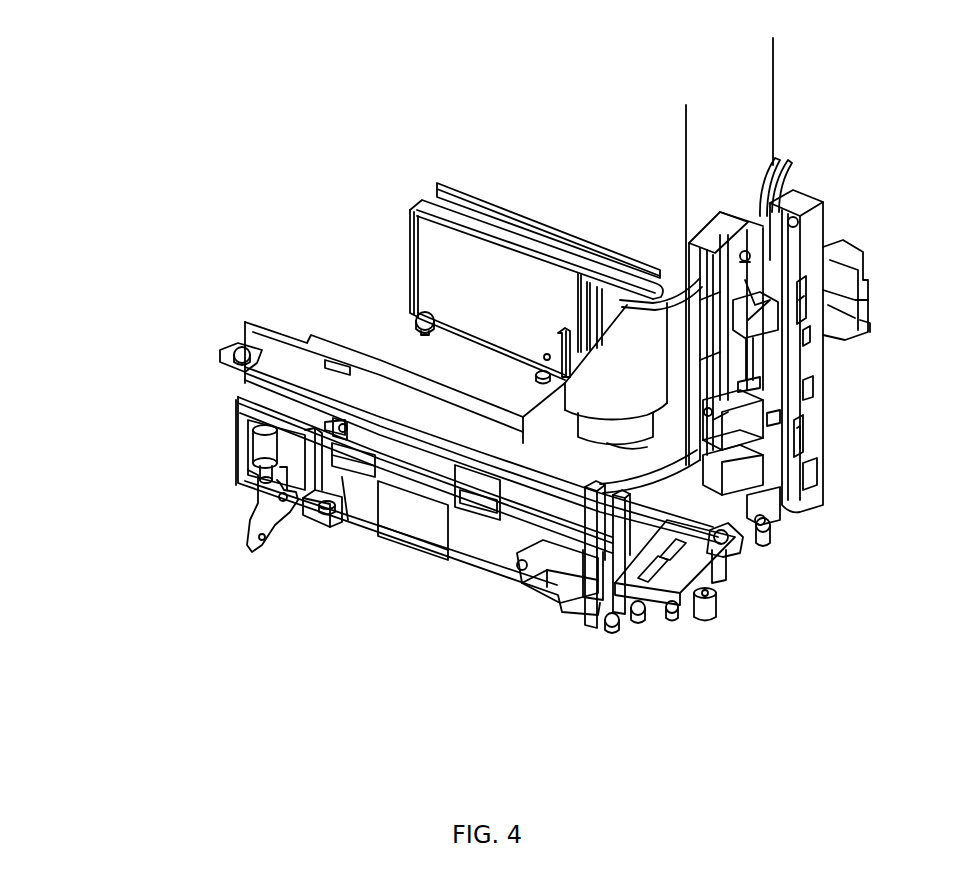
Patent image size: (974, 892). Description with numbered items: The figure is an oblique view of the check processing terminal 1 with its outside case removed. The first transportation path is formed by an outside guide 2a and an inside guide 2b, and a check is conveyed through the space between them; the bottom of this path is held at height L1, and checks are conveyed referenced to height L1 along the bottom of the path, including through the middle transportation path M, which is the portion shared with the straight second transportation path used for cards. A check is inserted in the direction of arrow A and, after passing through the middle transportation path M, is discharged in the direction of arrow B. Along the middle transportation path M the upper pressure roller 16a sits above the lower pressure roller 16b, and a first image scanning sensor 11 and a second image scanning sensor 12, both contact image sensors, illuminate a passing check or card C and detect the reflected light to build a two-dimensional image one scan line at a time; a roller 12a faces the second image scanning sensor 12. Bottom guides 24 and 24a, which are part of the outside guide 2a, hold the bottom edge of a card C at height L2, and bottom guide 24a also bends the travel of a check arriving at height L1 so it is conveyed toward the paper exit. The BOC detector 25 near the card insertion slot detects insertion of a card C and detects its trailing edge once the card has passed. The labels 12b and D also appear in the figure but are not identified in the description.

The check processing terminal 1 is at (490, 118).
The outside guide 2a is at (776, 160).
The inside guide 2b is at (650, 298).
The first image scanning sensor 11 is at (820, 203).
The second image scanning sensor 12 is at (704, 222).
The roller 12a is at (782, 290).
The slot 12b is at (770, 425).
The upper pressure roller 16a is at (705, 425).
The lower pressure roller 16b is at (740, 538).
The bottom guide 24 is at (558, 478).
The bottom guide 24a is at (668, 455).
The BOC (bottom of card) detector 25 is at (586, 508).
The height L1 is at (406, 308).
The height L2 is at (577, 477).
The middle transportation path M is at (770, 42).
The arrow A is at (405, 178).
The arrow B is at (198, 313).
The card C is at (500, 690).
The direction D is at (513, 708).